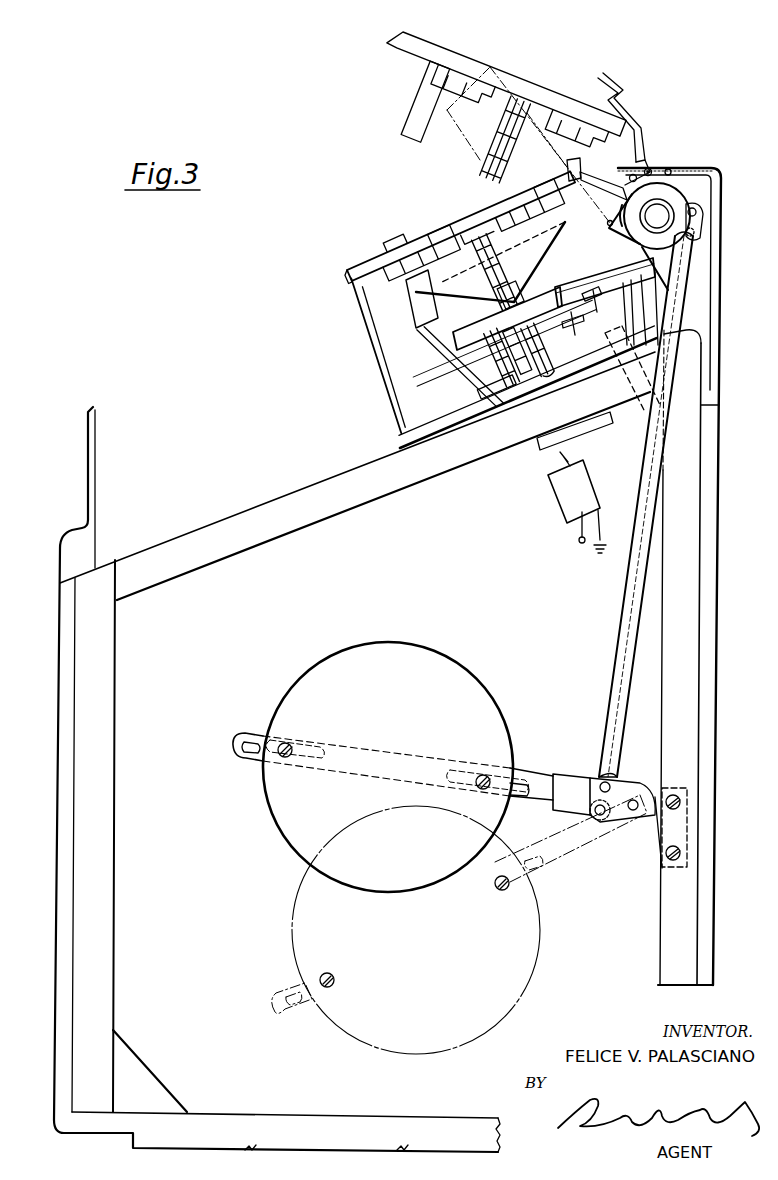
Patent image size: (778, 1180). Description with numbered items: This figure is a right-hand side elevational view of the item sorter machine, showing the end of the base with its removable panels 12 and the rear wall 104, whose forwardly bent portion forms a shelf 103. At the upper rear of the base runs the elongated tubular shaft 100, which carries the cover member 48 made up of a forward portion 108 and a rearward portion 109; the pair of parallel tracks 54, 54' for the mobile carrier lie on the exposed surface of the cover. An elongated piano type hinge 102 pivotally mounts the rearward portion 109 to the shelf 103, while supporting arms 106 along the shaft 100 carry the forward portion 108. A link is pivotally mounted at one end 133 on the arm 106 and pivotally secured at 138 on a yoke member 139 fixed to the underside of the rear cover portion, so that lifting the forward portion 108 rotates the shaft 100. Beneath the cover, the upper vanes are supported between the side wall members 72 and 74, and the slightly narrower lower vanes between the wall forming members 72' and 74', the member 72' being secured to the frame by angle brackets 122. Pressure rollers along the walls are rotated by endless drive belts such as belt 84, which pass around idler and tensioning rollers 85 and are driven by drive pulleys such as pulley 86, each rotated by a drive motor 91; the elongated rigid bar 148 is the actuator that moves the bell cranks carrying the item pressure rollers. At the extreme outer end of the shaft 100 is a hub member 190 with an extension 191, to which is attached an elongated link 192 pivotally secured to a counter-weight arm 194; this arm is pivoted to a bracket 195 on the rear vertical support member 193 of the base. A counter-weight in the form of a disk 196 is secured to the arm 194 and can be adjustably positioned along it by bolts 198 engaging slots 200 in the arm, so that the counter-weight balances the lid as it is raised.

The removable panel 12 is at (60, 668).
The cover member 48 is at (517, 80).
The track 54 is at (418, 243).
The track 54' is at (521, 205).
The side wall member 72 is at (490, 262).
The wall forming member 72' is at (517, 385).
The side wall member 74 is at (500, 268).
The wall forming member 74' is at (549, 368).
The endless drive belt 84 is at (512, 312).
The idler and tensioning roller 85 is at (612, 266).
The drive pulley 86 is at (616, 334).
The drive motor 91 is at (563, 495).
The tubular shaft 100 is at (700, 178).
The piano type hinge 102 is at (670, 168).
The shelf 103 is at (712, 166).
The rear wall 104 is at (719, 290).
The supporting arm 106 is at (418, 320).
The forward cover portion 108 is at (416, 236).
The rearward cover portion 109 is at (604, 193).
The angle bracket 122 is at (497, 395).
The link pivot end 133 is at (608, 226).
The pivot 138 is at (650, 168).
The yoke member 139 is at (635, 174).
The rigid bar 148 is at (591, 292).
The hub member 190 is at (700, 200).
The extension 191 is at (700, 212).
The elongated link 192 is at (620, 646).
The rear vertical support member 193 is at (696, 644).
The counter-weight arm 194 is at (567, 782).
The bracket 195 is at (651, 835).
The counter-weight disk 196 is at (400, 650).
The bolt 198 is at (284, 742).
The slot 200 is at (255, 748).